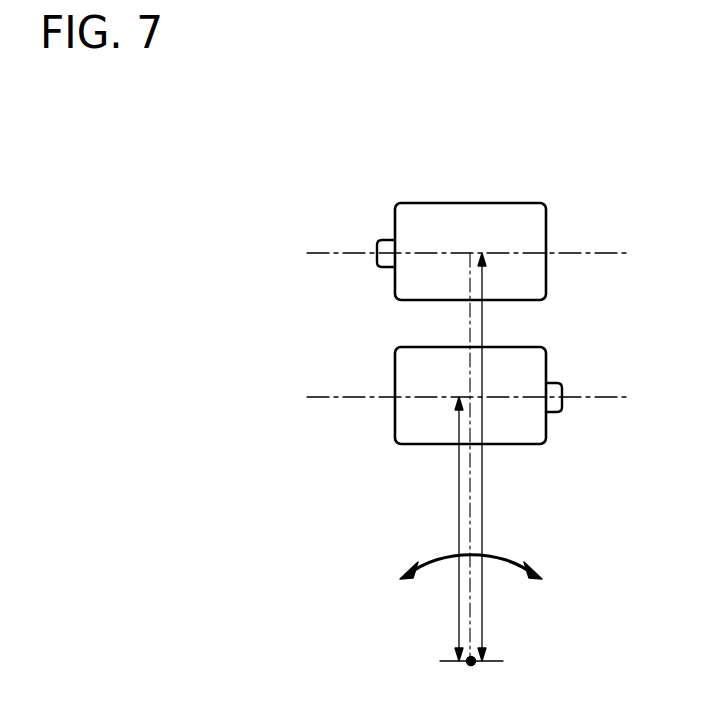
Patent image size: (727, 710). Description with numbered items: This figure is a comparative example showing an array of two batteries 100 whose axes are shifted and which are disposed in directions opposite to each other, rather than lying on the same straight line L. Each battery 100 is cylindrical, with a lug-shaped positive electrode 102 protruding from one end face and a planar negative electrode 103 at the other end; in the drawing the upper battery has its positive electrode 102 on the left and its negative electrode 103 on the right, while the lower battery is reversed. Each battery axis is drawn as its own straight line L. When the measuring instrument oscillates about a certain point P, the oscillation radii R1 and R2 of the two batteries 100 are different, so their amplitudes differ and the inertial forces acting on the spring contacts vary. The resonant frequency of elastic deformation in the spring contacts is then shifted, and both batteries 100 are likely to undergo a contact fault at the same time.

The battery 100 is at (472, 203).
The positive electrode 102 is at (377, 247).
The negative electrode 103 is at (547, 247).
The straight line L is at (320, 253).
The oscillation radius R1 is at (483, 495).
The oscillation radius R2 is at (459, 510).
The point of oscillation P is at (473, 665).